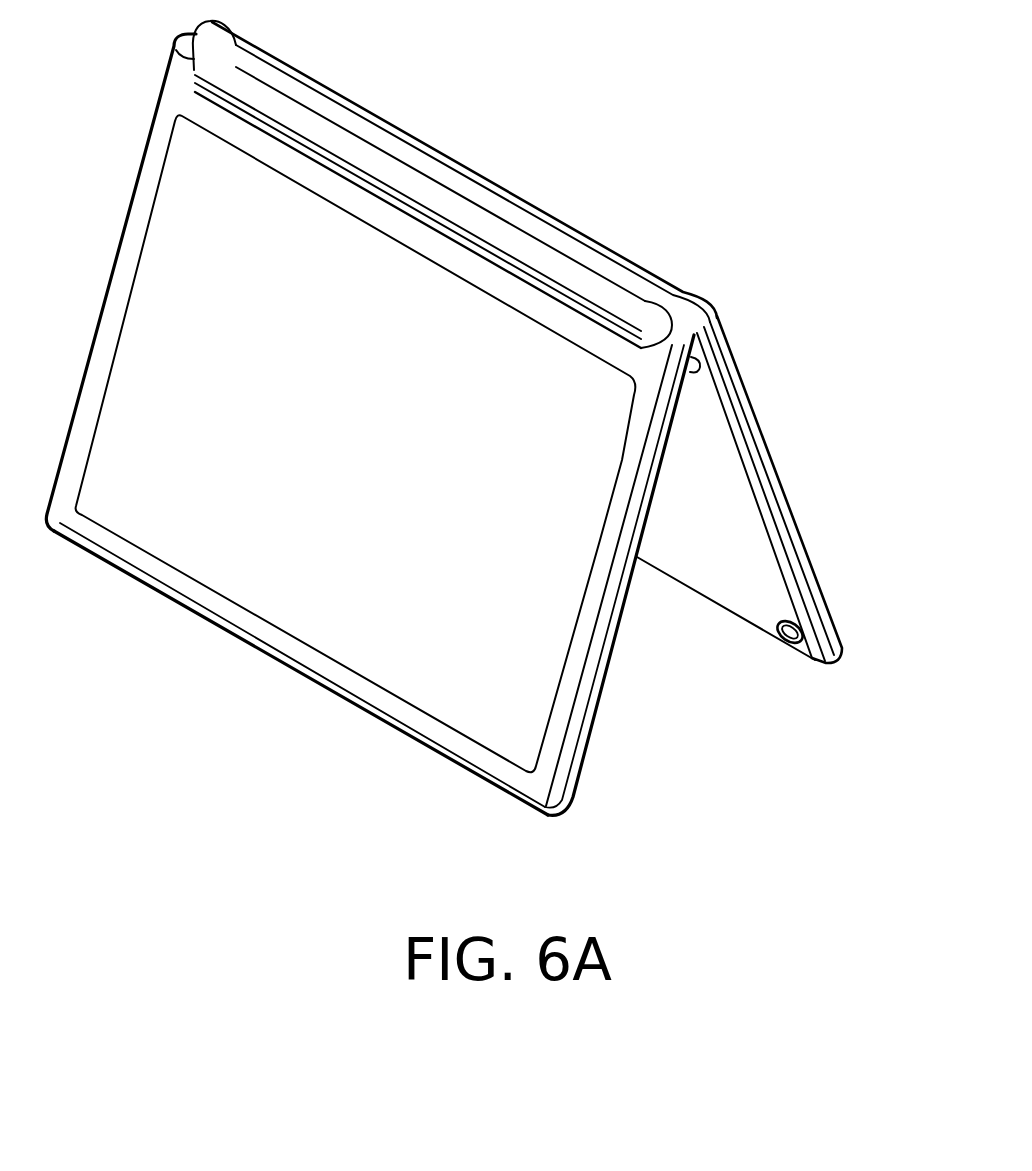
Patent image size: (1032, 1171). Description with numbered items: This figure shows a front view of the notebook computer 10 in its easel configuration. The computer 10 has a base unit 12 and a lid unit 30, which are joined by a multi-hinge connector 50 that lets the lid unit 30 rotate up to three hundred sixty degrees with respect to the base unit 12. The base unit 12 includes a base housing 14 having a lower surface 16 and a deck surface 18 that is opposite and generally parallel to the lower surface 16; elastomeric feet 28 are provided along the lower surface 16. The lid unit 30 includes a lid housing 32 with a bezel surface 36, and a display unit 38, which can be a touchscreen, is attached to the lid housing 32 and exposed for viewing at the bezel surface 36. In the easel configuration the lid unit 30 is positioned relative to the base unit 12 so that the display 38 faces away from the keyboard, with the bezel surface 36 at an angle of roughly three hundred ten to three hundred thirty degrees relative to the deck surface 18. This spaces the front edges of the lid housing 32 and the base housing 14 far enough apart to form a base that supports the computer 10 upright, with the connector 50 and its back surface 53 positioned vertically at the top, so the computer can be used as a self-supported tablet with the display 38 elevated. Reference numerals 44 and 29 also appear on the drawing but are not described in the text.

The notebook computer 10 is at (458, 92).
The base unit 12 is at (808, 672).
The base housing 14 is at (823, 625).
The lower surface 16 is at (720, 511).
The deck surface 18 is at (812, 443).
The elastomeric feet 28 is at (790, 618).
The bottom edge 29 is at (716, 608).
The lid unit 30 is at (127, 586).
The lid housing 32 is at (572, 777).
The bezel surface 36 is at (576, 677).
The display unit 38 is at (341, 447).
The display bottom edge 44 is at (312, 684).
The multi-hinge connector 50 is at (639, 261).
The back surface of the connector 53 is at (527, 222).